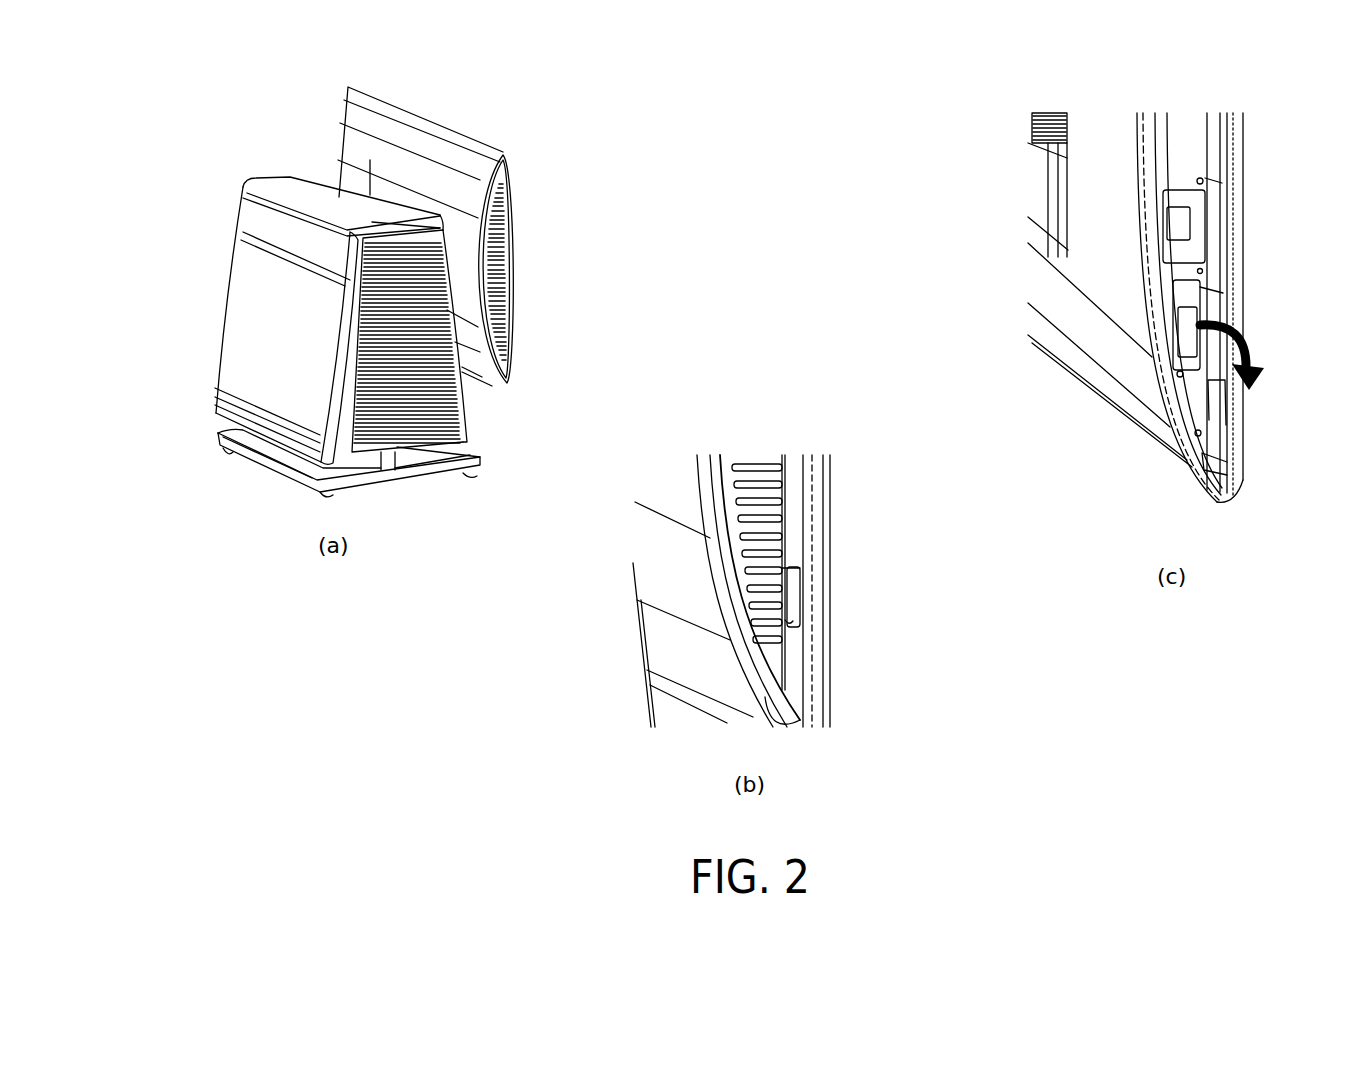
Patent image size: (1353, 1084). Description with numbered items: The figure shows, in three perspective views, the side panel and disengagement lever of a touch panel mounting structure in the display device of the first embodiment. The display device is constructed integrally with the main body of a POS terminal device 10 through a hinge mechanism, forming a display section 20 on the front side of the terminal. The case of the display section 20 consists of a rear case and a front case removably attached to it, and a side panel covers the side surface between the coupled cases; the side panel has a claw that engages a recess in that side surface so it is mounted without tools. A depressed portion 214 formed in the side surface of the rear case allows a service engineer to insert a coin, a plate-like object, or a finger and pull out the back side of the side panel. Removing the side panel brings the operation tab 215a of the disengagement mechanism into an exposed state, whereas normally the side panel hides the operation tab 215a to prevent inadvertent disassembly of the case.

The POS terminal device 10 is at (206, 272).
The display section 20 is at (466, 240).
The depressed portion 214 is at (797, 593).
The operation tab 215a is at (1170, 347).